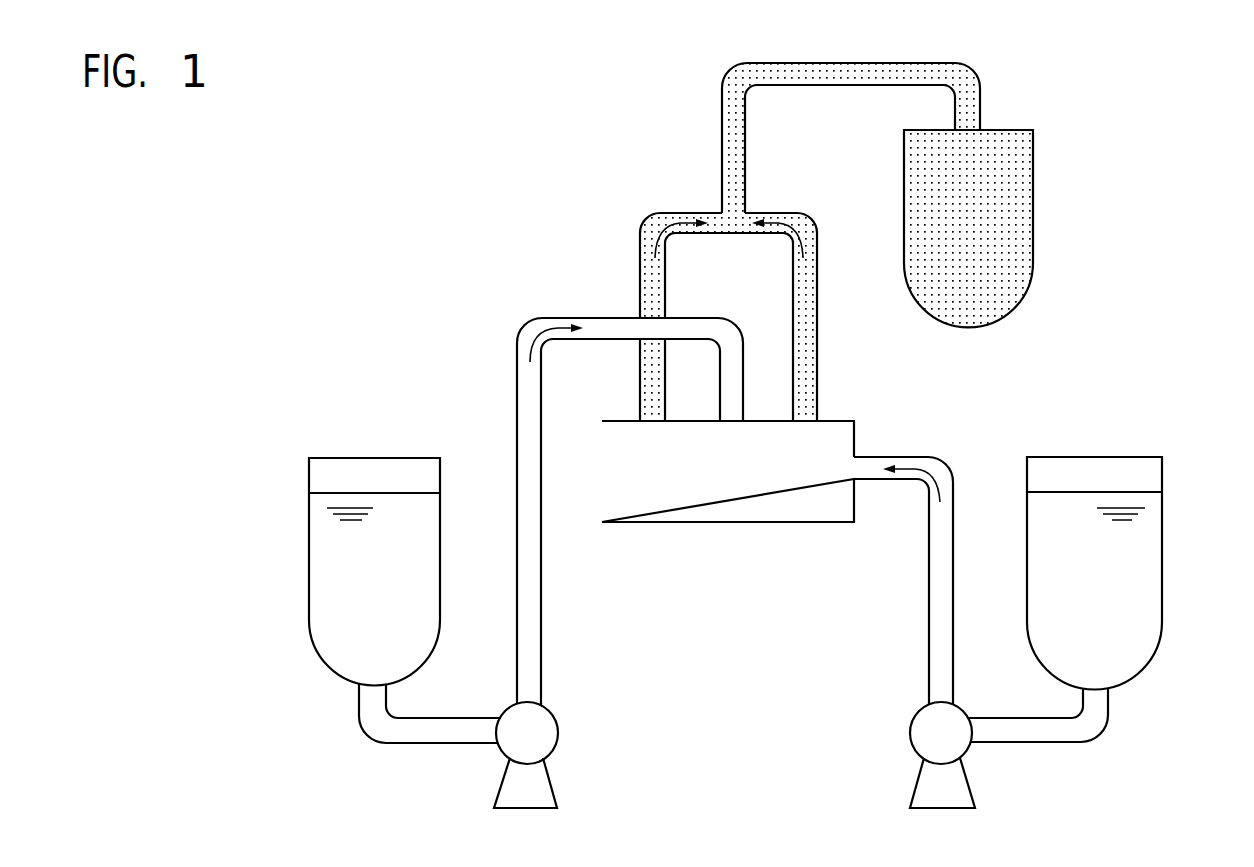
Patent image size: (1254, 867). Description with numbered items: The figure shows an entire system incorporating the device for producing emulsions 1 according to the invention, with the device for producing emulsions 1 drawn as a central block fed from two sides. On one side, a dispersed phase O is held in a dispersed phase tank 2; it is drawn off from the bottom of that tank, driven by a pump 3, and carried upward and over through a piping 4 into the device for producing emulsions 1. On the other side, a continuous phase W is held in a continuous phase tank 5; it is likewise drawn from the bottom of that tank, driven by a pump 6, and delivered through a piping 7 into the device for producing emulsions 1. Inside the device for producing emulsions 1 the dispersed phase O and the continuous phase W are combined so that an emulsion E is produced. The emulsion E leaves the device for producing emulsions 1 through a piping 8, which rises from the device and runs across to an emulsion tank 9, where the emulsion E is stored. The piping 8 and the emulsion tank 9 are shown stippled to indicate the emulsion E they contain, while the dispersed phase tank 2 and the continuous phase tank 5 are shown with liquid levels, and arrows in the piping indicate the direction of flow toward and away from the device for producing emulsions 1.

The device for producing emulsions 1 is at (699, 502).
The dispersed phase tank 2 is at (309, 542).
The dispersed phase O is at (322, 613).
The pump 3 is at (560, 732).
The piping 4 is at (522, 421).
The continuous phase tank 5 is at (1162, 520).
The continuous phase W is at (1137, 605).
The pump 6 is at (912, 732).
The piping 7 is at (937, 578).
The piping 8 is at (725, 148).
The emulsion tank 9 is at (1033, 177).
The emulsion E is at (1013, 245).